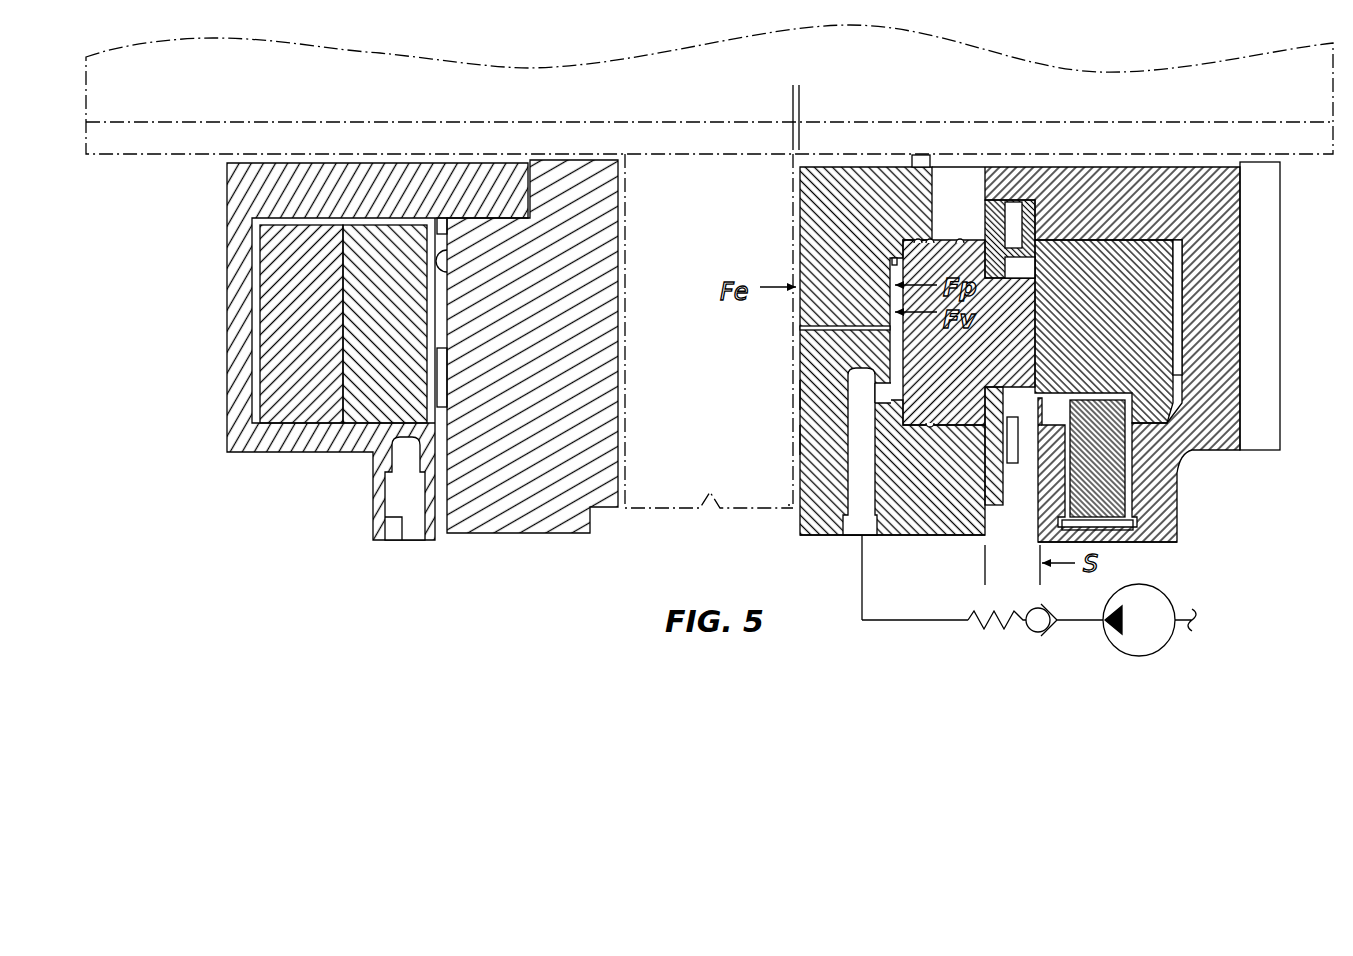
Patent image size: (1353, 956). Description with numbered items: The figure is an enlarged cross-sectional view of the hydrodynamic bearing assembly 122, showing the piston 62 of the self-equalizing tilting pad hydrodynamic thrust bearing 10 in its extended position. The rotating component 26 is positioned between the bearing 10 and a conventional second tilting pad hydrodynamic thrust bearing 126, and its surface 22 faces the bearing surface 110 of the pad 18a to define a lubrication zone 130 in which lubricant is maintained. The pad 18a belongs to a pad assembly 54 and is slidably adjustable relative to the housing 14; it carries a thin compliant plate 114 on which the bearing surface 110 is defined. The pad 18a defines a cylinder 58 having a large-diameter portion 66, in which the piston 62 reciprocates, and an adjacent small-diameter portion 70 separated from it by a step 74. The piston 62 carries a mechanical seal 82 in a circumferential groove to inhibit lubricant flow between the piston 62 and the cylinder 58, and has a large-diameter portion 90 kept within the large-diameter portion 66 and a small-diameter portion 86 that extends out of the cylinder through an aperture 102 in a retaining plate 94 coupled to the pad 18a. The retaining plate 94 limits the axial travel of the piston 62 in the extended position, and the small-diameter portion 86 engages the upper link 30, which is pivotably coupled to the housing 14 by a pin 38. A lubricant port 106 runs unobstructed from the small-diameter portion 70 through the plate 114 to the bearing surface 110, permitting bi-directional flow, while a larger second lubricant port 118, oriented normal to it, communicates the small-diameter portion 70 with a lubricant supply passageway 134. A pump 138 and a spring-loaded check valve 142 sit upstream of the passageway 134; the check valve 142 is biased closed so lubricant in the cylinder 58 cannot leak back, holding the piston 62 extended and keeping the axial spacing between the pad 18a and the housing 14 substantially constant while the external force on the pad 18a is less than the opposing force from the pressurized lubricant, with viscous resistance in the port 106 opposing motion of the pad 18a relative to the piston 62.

The self-equalizing hydrodynamic thrust bearing 10 is at (1247, 572).
The housing 14 is at (1232, 290).
The pad 18a is at (820, 190).
The surface of the rotating component 22 is at (805, 465).
The rotating component 26 is at (652, 515).
The upper link 30 is at (1137, 322).
The pin 38 is at (1113, 483).
The pad assembly 54 is at (838, 574).
The cylinder 58 is at (988, 200).
The piston 62 is at (920, 345).
The large-diameter portion of the cylinder 66 is at (920, 240).
The small-diameter portion of the cylinder 70 is at (885, 262).
The step 74 is at (927, 427).
The mechanical seal 82 is at (930, 428).
The small-diameter portion of the piston 86 is at (1033, 267).
The large-diameter portion of the piston 90 is at (958, 240).
The retaining plate 94 is at (1000, 210).
The aperture 102 is at (1000, 380).
The lubricant port 106 is at (830, 322).
The bearing surface 110 is at (795, 395).
The compliant plate 114 is at (790, 437).
The second lubricant port 118 is at (855, 490).
The hydrodynamic bearing assembly 122 is at (290, 670).
The second tilting pad hydrodynamic thrust bearing 126 is at (278, 505).
The lubrication zone 130 is at (825, 97).
The lubricant supply passageway 134 is at (930, 623).
The pump 138 is at (1133, 656).
The spring-loaded check valve 142 is at (1035, 635).